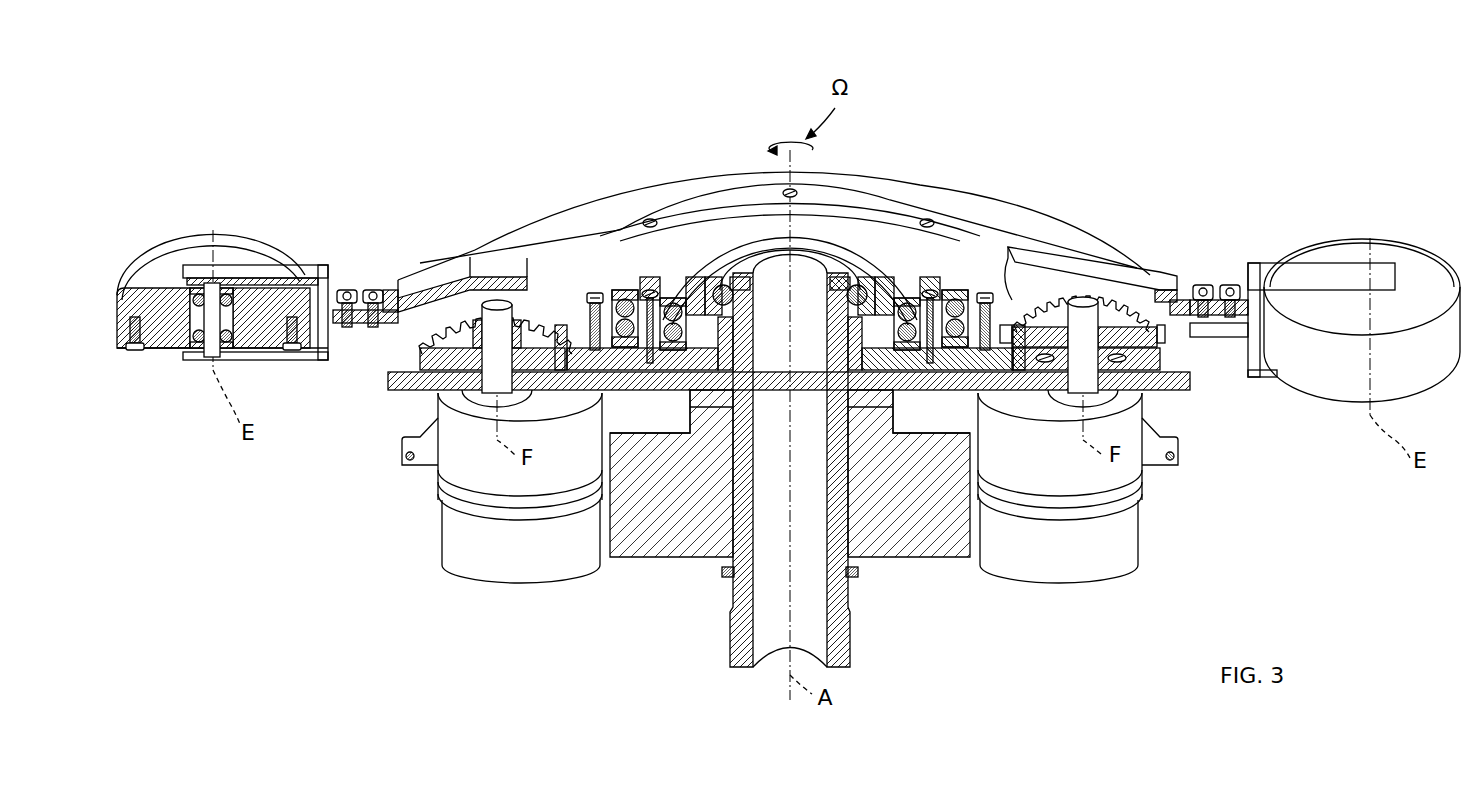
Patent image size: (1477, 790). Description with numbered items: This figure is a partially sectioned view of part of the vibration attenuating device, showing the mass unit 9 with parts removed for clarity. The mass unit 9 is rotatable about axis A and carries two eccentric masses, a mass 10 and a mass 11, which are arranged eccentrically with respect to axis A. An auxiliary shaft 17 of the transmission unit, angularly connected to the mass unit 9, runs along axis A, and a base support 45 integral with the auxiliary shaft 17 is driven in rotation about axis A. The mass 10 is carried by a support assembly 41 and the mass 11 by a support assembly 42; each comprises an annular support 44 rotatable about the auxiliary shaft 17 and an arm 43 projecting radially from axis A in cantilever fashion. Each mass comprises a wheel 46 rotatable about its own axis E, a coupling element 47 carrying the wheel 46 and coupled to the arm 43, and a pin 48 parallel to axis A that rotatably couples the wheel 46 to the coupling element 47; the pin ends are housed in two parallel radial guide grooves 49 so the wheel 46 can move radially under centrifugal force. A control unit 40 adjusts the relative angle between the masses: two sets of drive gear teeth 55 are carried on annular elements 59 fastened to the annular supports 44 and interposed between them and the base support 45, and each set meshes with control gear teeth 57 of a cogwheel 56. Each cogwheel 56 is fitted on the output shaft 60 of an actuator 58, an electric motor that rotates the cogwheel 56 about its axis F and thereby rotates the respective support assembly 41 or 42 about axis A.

The mass unit 9 is at (1194, 132).
The mass 10 is at (246, 206).
The mass 11 is at (1396, 212).
The auxiliary shaft 17 is at (735, 628).
The control unit 40 is at (660, 532).
The support assembly 41 is at (497, 200).
The support assembly 42 is at (1038, 208).
The arm 43 is at (428, 272).
The annular support 44 is at (732, 207).
The base support 45 is at (540, 219).
The wheel 46 is at (162, 258).
The coupling element 47 is at (321, 268).
The pin 48 is at (210, 357).
The guide grooves 49 is at (191, 295).
The drive gear teeth 55 is at (590, 352).
The cogwheel 56 is at (410, 360).
The control gear teeth 57 is at (538, 320).
The actuator 58 is at (462, 542).
The annular element 59 is at (628, 383).
The output shaft 60 is at (490, 388).